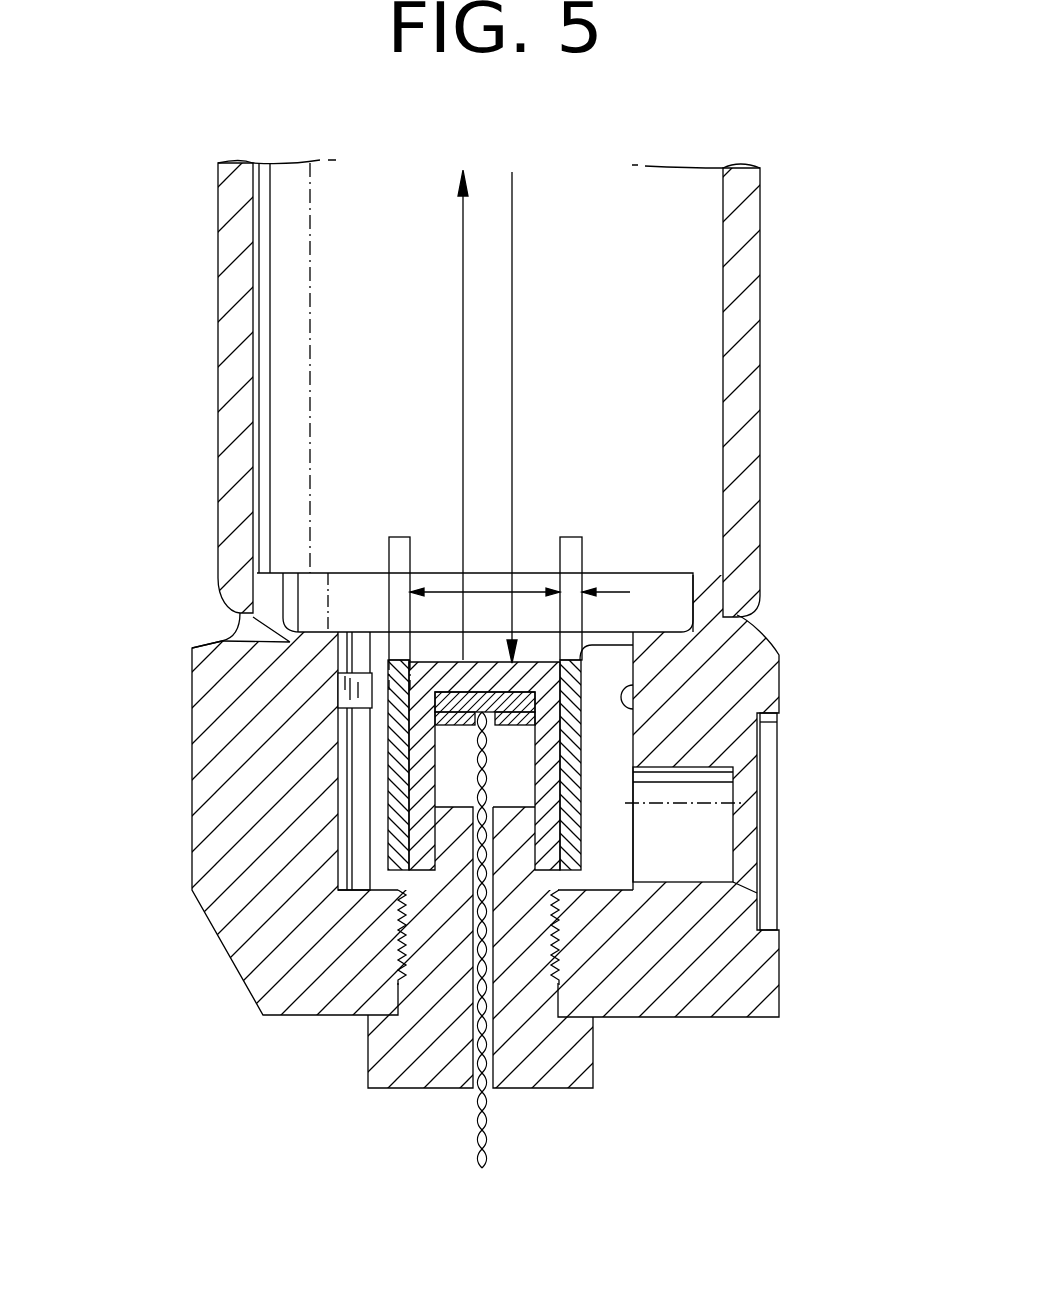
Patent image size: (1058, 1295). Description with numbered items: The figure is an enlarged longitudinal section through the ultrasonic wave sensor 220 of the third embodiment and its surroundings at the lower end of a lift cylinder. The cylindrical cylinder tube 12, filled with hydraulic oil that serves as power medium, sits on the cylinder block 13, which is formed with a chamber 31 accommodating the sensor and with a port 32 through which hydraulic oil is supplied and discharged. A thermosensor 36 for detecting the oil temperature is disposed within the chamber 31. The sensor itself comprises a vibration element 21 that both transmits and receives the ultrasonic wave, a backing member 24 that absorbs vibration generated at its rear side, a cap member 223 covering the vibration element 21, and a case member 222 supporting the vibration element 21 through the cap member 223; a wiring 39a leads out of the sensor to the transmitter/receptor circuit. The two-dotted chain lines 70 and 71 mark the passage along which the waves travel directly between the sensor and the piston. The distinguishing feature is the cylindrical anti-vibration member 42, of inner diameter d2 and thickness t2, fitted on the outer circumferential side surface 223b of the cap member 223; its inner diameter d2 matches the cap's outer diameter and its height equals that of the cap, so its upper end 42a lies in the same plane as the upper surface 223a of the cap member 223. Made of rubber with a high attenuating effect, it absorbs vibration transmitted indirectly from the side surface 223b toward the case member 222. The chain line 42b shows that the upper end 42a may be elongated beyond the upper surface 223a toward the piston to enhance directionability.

The cylinder tube 12 is at (235, 272).
The cylinder block 13 is at (275, 985).
The vibration element 21 is at (427, 750).
The backing member 24 is at (418, 777).
The chamber 31 is at (625, 700).
The port 32 is at (695, 833).
The thermosensor 36 is at (340, 692).
The wiring 39a is at (488, 1135).
The anti-vibration member 42 is at (398, 873).
The upper end 42a is at (573, 652).
The protruding portion 42b is at (390, 560).
The two-dotted chain line 70 is at (463, 305).
The two-dotted chain line 71 is at (512, 305).
The ultrasonic wave sensor 220 is at (548, 522).
The case member 222 is at (376, 1062).
The cap member 223 is at (400, 823).
The upper surface 223a is at (223, 640).
The side surface 223b is at (762, 718).
The inner diameter d2 is at (457, 592).
The thickness t2 is at (626, 605).